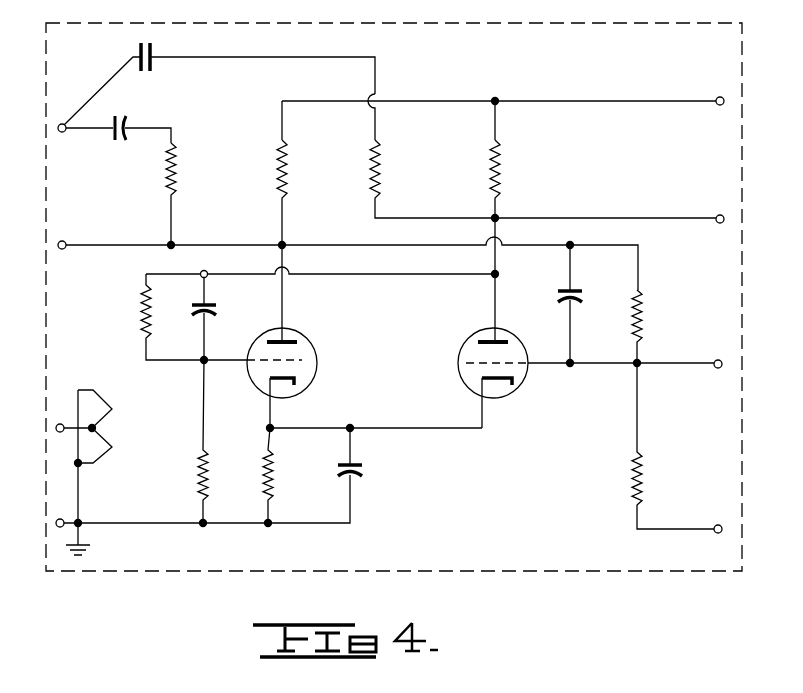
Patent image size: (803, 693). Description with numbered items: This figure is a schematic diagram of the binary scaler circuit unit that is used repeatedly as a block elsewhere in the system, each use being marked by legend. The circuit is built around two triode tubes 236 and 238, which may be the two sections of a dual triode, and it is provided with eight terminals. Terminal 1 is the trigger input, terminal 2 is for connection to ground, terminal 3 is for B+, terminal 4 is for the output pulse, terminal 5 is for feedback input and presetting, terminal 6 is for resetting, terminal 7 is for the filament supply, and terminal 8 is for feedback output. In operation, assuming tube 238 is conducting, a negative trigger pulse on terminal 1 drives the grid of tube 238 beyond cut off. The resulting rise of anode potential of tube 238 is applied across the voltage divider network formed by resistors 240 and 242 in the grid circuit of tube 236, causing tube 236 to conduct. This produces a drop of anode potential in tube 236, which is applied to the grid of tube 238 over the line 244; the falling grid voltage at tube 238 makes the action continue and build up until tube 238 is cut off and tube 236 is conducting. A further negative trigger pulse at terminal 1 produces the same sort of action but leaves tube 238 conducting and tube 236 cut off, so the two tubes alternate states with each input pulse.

The trigger input terminal 1 is at (62, 140).
The ground terminal 2 is at (58, 532).
The B+ terminal 3 is at (718, 119).
The output pulse terminal 4 is at (717, 232).
The feedback input and presetting terminal 5 is at (716, 378).
The resetting terminal 6 is at (716, 542).
The filament supply terminal 7 is at (60, 441).
The feedback output terminal 8 is at (61, 257).
The triode tube 236 is at (307, 340).
The triode tube 238 is at (516, 341).
The resistor 240 is at (143, 315).
The resistor 242 is at (201, 462).
The line 244 is at (371, 245).